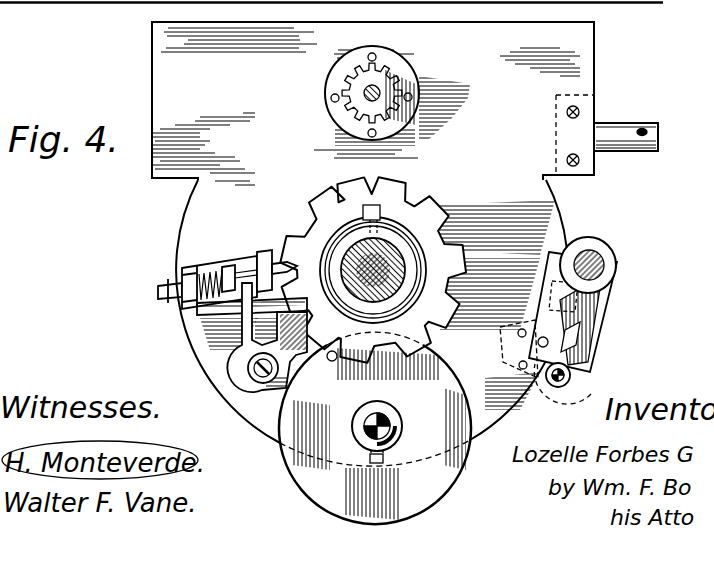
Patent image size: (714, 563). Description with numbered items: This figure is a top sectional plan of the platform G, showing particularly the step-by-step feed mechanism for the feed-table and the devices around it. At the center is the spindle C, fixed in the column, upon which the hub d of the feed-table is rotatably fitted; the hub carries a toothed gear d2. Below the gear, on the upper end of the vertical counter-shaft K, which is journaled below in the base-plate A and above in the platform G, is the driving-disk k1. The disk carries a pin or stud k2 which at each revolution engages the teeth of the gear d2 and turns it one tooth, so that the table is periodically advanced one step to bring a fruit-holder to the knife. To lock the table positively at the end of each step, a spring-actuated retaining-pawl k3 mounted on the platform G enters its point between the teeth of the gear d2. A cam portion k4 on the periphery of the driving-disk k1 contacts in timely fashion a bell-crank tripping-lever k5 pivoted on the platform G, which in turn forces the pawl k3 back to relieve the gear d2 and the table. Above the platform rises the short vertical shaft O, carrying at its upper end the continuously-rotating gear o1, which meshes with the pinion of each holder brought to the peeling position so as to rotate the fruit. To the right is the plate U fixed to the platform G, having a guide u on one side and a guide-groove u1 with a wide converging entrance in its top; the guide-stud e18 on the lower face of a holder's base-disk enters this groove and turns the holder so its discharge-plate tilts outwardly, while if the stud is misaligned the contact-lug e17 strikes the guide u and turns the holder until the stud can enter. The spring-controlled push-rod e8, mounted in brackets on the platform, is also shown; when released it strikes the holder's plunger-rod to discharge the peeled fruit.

The base-plate A is at (32, 3).
The platform G is at (595, 67).
The short vertical shaft O is at (364, 92).
The gear o1 is at (386, 85).
The spindle C is at (342, 250).
The hub d is at (393, 250).
The gear d2 is at (393, 186).
The driving-disk k1 is at (300, 458).
The vertical counter-shaft K is at (381, 422).
The pin or stud k2 is at (330, 359).
The spring-actuated retaining-pawl k3 is at (158, 287).
The cam portion k4 is at (282, 388).
The bell-crank tripping-lever k5 is at (251, 340).
The plate U is at (584, 312).
The guide u is at (556, 294).
The guide-groove u1 is at (577, 347).
The contact-lug e17 is at (577, 279).
The guide-stud e18 is at (610, 277).
The push-rod e8 is at (553, 383).